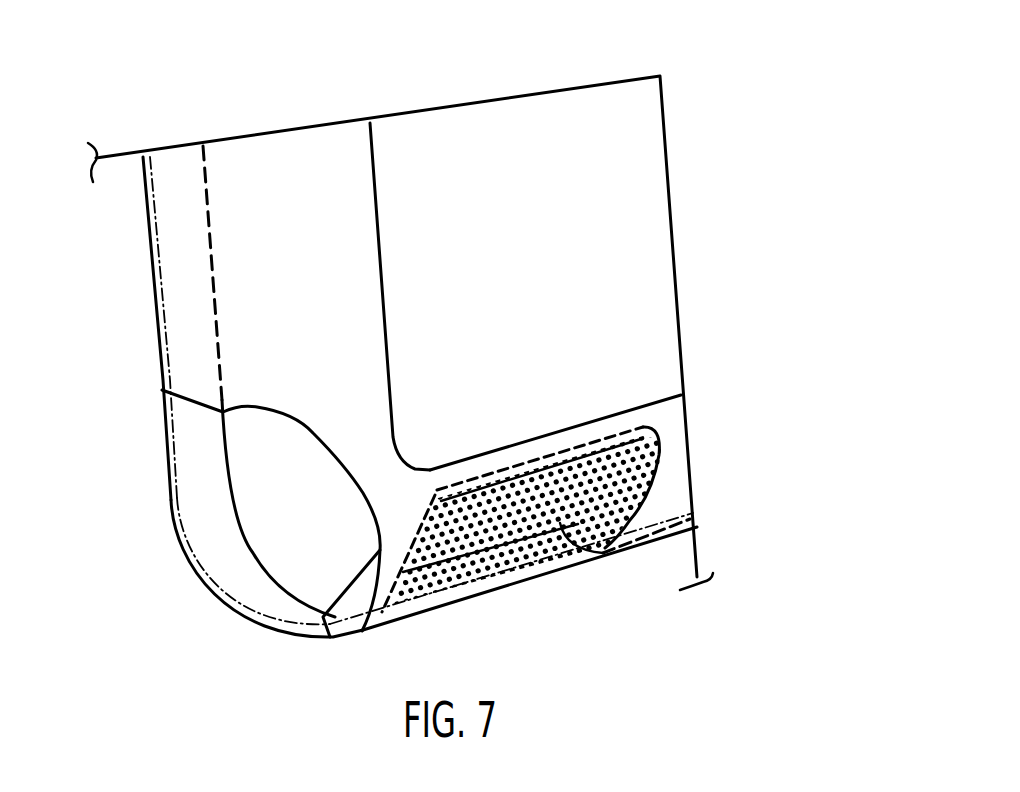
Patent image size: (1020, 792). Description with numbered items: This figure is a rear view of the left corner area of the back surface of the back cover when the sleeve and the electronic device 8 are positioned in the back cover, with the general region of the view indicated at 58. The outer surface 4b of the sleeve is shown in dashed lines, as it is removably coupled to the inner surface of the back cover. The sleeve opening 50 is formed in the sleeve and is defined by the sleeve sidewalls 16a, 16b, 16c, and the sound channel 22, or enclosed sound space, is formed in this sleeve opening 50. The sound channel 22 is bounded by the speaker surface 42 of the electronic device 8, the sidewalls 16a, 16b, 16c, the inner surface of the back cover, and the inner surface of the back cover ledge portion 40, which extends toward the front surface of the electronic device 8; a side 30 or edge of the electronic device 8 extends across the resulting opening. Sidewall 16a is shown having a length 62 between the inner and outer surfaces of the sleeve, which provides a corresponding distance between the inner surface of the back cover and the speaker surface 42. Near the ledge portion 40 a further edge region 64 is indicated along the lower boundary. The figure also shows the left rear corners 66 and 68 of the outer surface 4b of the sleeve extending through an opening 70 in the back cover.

The housing 58 is at (551, 132).
The electronic device 8 is at (168, 433).
The left rear corner 66 is at (202, 508).
The opening 70 is at (290, 495).
The left rear corner 68 is at (287, 560).
The sleeve sidewall 16c is at (435, 493).
The outer surface 4b is at (673, 440).
The sleeve sidewall 16b is at (527, 475).
The sound channel 22 is at (433, 537).
The side 30 is at (640, 467).
The speaker surface 42 is at (613, 487).
The sleeve opening 50 is at (541, 503).
The inner bottom edge 64 is at (466, 587).
The ledge portion 40 is at (509, 584).
The length 62 is at (635, 523).
The sleeve sidewall 16a is at (603, 553).